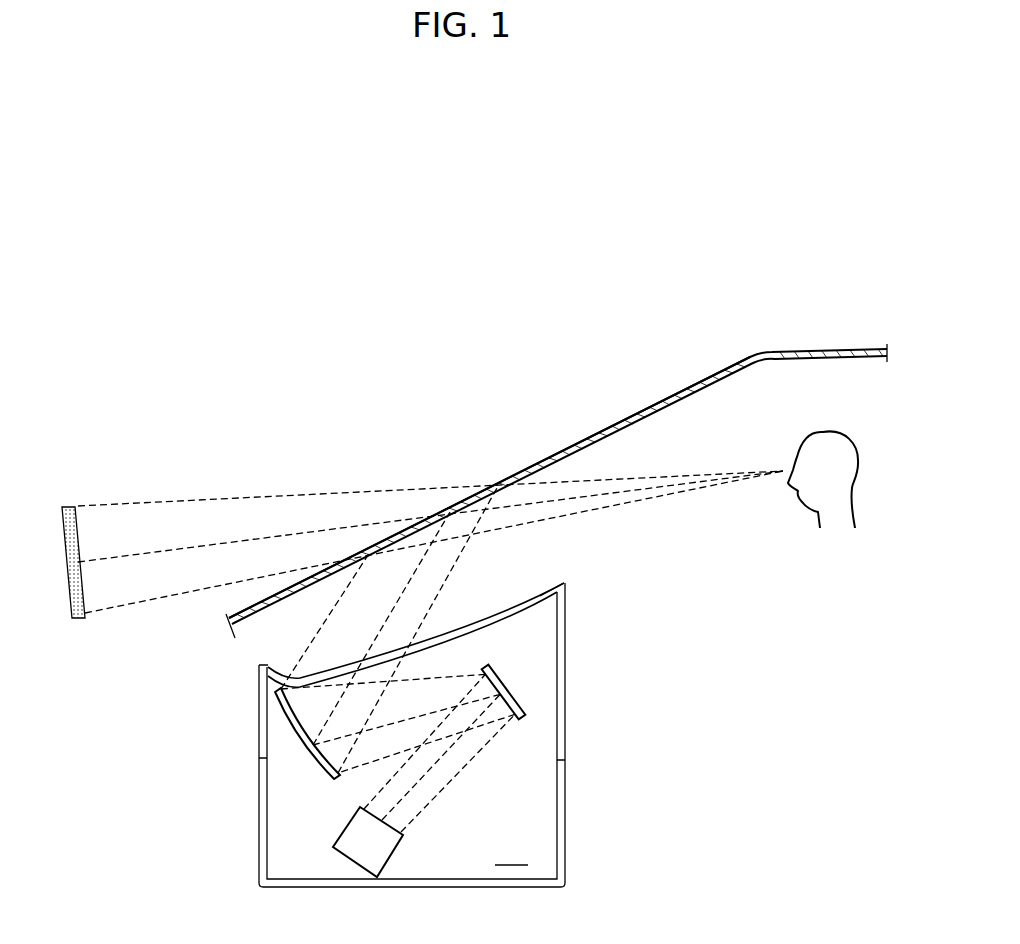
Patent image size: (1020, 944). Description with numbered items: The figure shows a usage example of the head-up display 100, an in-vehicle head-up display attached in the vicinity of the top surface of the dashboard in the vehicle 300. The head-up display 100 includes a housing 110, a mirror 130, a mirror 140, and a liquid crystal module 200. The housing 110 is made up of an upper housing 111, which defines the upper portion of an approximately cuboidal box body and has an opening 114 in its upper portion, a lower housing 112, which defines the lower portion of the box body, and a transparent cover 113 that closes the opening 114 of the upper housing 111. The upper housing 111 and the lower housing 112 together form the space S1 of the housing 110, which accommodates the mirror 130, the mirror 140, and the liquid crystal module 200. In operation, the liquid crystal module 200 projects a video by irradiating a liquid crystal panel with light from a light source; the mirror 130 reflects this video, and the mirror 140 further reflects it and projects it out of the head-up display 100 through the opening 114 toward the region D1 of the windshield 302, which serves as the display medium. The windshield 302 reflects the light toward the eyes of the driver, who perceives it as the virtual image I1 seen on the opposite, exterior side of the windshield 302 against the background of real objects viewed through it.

The head-up display 100 is at (490, 709).
The housing 110 is at (490, 709).
The upper housing 111 is at (565, 697).
The lower housing 112 is at (565, 783).
The transparent cover 113 is at (540, 596).
The opening 114 is at (544, 586).
The mirror 130 is at (510, 694).
The mirror 140 is at (306, 748).
The liquid crystal module 200 is at (350, 860).
The vehicle 300 is at (802, 351).
The windshield 302 is at (621, 421).
The region D1 is at (455, 504).
The virtual image I1 is at (69, 603).
The space S1 is at (511, 854).